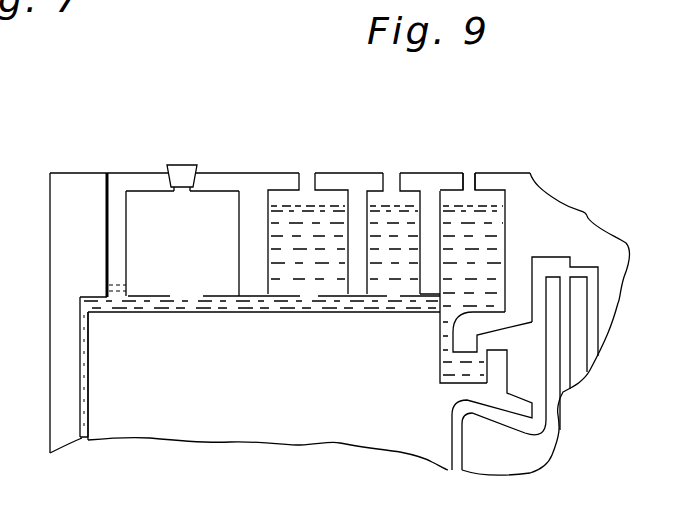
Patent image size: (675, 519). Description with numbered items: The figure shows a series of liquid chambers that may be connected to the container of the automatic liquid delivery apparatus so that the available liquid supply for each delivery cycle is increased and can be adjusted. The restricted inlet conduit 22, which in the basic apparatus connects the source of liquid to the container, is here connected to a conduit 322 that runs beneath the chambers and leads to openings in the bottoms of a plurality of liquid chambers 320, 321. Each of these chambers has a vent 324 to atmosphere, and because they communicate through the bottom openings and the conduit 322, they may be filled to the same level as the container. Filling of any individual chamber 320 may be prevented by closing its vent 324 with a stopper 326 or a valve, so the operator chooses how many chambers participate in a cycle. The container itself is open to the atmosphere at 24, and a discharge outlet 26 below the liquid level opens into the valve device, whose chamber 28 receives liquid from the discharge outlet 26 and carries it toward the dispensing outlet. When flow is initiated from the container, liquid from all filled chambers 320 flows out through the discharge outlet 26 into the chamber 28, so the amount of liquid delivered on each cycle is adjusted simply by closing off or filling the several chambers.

The restricted passage 22 is at (80, 360).
The atmosphere opening 24 is at (468, 172).
The discharge outlet 26 is at (485, 351).
The chamber 28 is at (538, 382).
The liquid chamber 320 is at (279, 200).
The second compartment 321 is at (373, 200).
The conduit 322 is at (247, 306).
The vent 324 is at (395, 172).
The stopper 326 is at (177, 172).